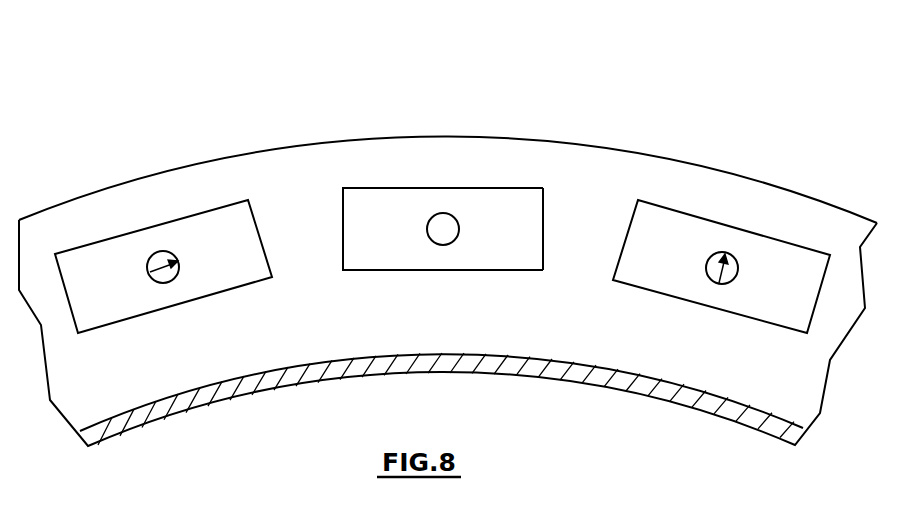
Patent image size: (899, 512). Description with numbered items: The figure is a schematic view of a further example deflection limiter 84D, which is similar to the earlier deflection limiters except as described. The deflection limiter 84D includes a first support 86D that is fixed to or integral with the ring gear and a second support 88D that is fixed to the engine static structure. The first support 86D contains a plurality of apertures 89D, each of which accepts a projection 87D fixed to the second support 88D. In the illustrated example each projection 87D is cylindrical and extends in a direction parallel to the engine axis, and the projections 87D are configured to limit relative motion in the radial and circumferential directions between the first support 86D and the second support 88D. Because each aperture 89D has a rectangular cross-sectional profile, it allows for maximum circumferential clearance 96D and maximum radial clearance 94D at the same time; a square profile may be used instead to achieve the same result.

The deflection limiter 84D is at (705, 92).
The first support 86D is at (675, 178).
The projection 87D is at (443, 226).
The second support 88D is at (528, 198).
The aperture 89D is at (533, 219).
The radial clearance 94D is at (734, 228).
The circumferential clearance 96D is at (263, 231).